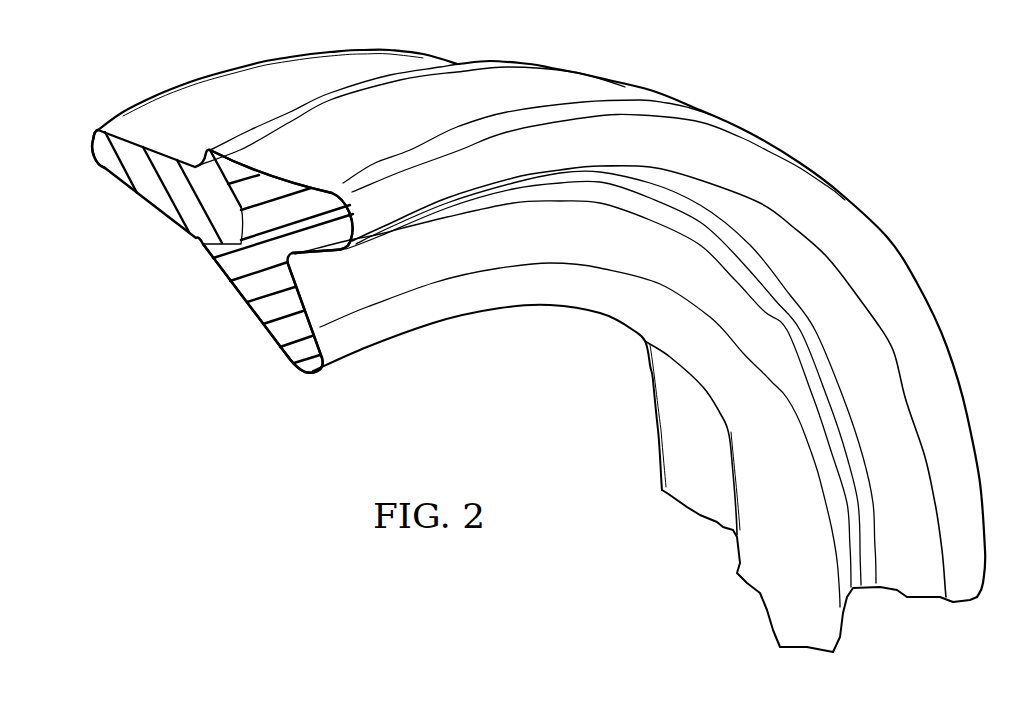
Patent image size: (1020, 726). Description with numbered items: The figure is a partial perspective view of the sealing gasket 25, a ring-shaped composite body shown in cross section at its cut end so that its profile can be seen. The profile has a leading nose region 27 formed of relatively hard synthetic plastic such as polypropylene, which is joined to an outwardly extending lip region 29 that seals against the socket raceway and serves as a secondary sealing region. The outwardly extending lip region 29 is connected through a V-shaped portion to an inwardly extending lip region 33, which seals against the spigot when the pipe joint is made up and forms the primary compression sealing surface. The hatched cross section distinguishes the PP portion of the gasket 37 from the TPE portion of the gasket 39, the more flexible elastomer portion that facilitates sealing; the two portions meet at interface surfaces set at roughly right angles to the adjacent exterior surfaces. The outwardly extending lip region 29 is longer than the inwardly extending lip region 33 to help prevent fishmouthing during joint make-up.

The sealing gasket 25 is at (720, 76).
The leading nose region 27 is at (74, 128).
The outwardly extending lip region 29 is at (352, 228).
The inwardly extending lip region 33 is at (300, 372).
The PP portion of the gasket 37 is at (137, 160).
The TPE portion of the gasket 39 is at (254, 288).